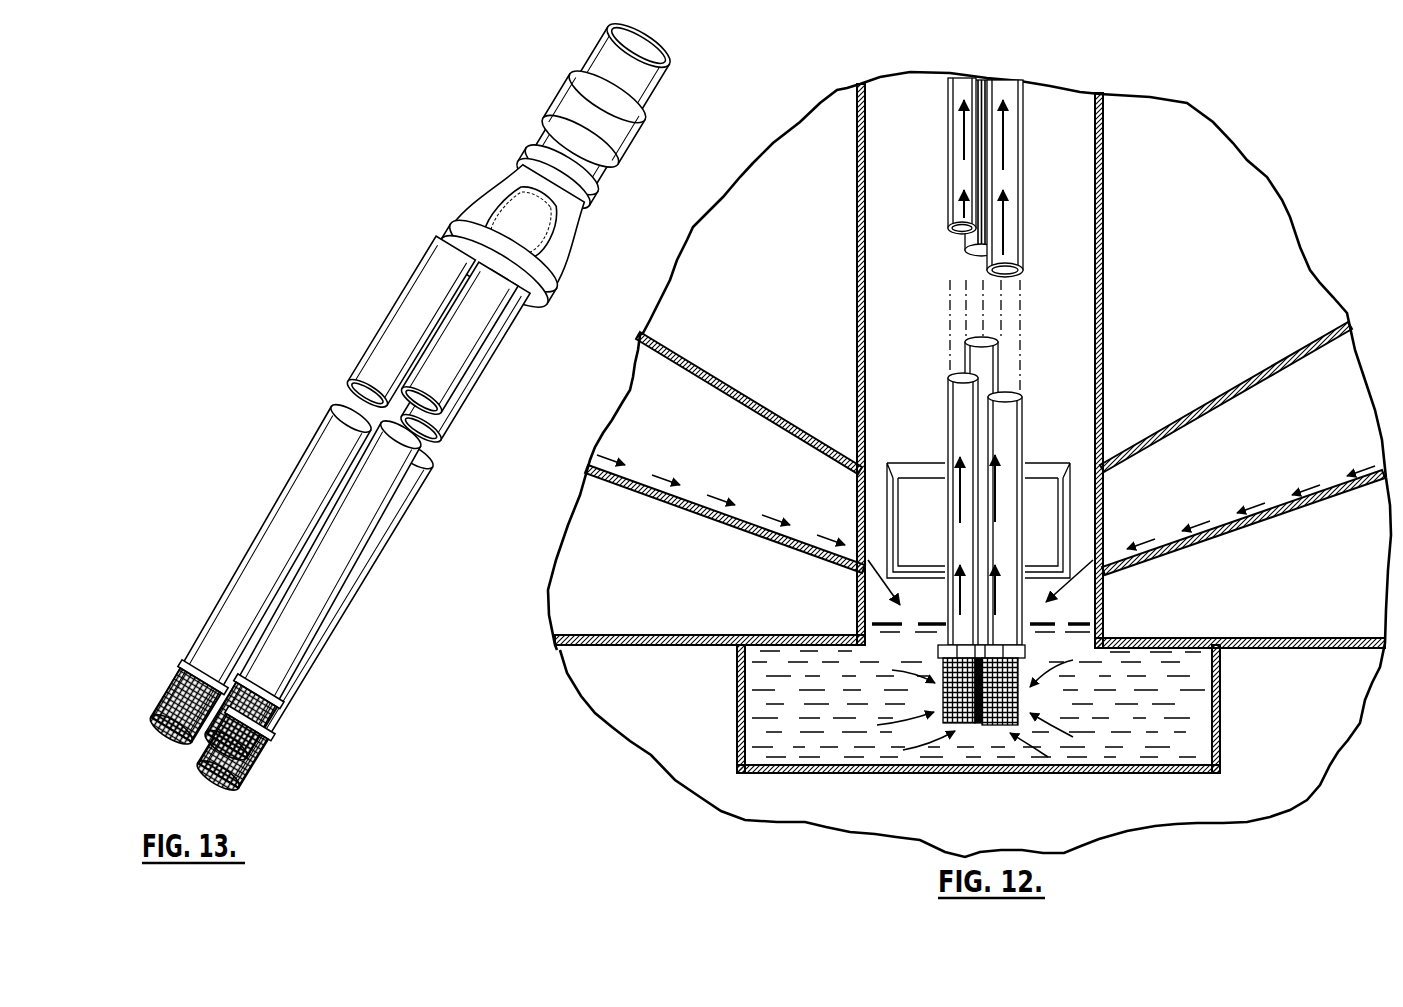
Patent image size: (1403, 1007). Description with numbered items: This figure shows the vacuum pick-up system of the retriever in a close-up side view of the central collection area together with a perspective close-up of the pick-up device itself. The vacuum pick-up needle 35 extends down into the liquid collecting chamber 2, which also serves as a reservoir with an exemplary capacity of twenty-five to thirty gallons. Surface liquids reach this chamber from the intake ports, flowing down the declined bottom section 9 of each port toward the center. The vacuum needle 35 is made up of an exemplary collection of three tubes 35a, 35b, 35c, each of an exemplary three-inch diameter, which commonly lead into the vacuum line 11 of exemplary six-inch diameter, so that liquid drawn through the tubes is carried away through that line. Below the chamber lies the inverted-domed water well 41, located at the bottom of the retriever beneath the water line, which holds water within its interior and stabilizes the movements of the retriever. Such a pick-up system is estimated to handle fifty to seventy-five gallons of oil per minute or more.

In FIG. 12, the liquid collecting chamber 2 is at (1150, 697).
In FIG. 12, the declined bottom section 9 is at (803, 545).
In FIG. 13, the vacuum line 11 is at (630, 122).
In FIG. 12, the vacuum pick-up needle 35 is at (1032, 414).
In FIG. 13, the vacuum pick-up needle 35 is at (346, 362).
In FIG. 13, the tube 35a is at (282, 732).
In FIG. 13, the tube 35b is at (240, 788).
In FIG. 13, the tube 35c is at (175, 672).
In FIG. 12, the water well 41 is at (1021, 822).